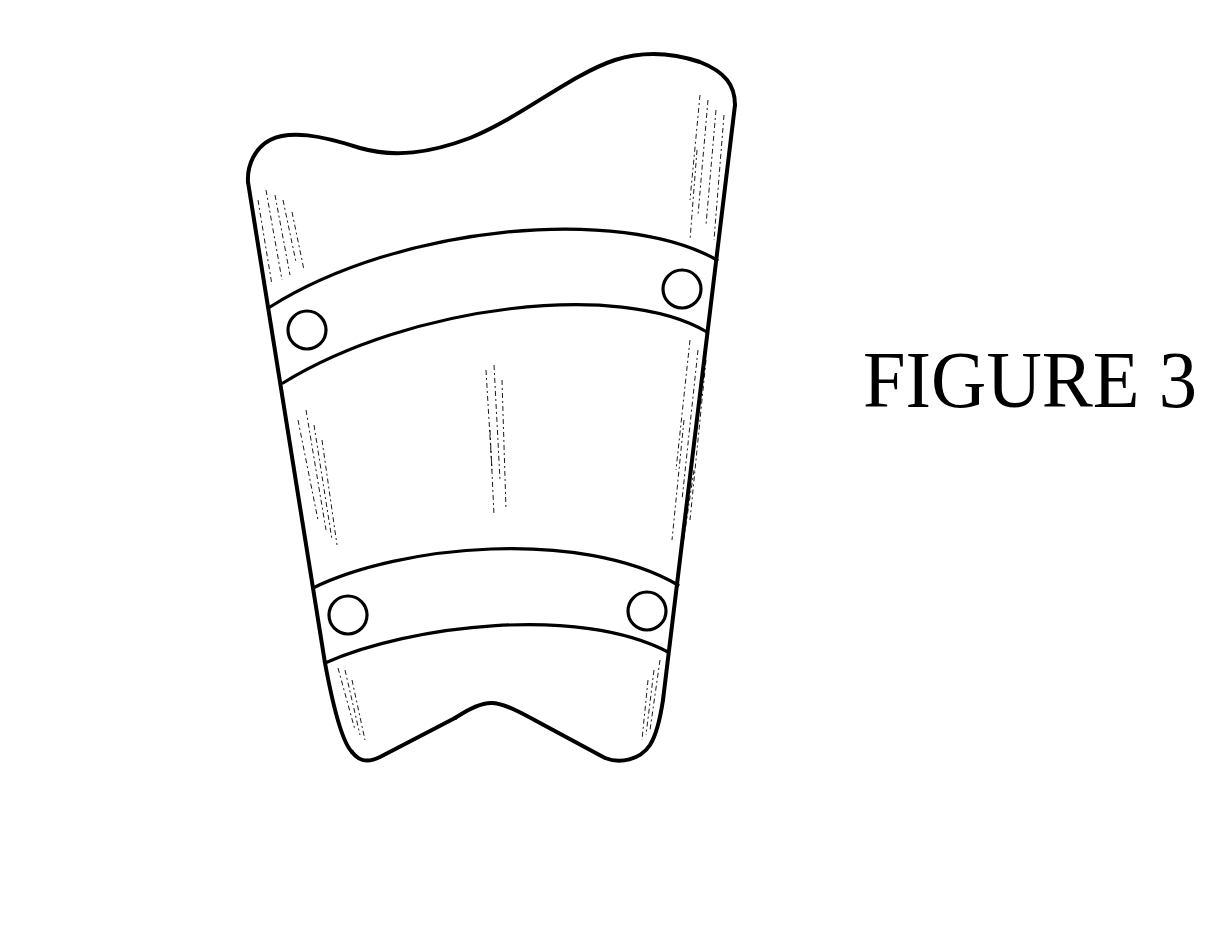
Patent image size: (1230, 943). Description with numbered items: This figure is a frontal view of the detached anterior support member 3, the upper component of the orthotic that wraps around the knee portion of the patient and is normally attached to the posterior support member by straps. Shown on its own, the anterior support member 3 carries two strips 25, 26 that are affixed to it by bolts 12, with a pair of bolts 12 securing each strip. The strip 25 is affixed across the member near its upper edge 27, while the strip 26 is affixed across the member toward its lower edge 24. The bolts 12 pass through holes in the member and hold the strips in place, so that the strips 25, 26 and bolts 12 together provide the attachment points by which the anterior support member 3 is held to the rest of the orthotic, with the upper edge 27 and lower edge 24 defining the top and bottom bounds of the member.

The anterior support member 3 is at (550, 440).
The bolts 12 is at (684, 290).
The lower edge 24 is at (510, 707).
The strip 25 is at (487, 263).
The strip 26 is at (475, 593).
The upper edge 27 is at (408, 152).